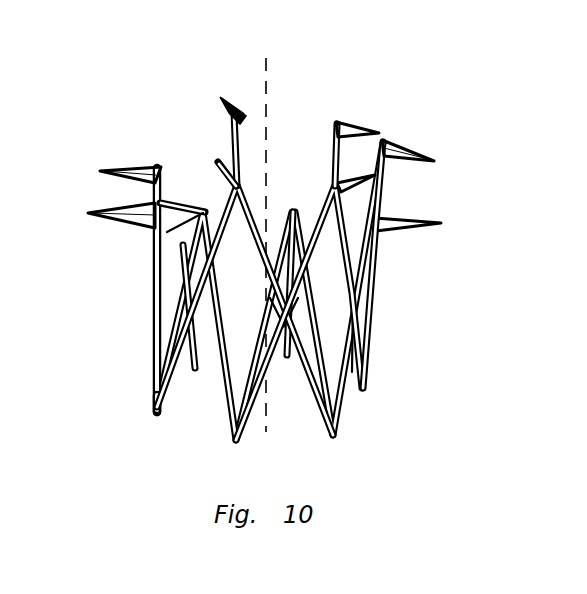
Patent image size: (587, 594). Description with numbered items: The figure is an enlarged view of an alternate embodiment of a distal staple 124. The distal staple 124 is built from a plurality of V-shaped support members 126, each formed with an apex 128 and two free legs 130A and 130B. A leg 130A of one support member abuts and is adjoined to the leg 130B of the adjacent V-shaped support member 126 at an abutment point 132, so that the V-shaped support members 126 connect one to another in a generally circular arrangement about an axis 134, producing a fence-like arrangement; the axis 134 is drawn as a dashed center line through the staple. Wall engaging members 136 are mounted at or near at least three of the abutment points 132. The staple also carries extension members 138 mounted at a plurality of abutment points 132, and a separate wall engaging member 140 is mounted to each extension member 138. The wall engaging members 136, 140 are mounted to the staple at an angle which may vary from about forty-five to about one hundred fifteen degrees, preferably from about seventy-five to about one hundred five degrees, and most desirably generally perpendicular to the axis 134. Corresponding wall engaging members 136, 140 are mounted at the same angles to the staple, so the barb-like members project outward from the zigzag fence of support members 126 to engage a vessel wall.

The distal staple 124 is at (249, 257).
The V-shaped support member 126 is at (150, 312).
The apex 128 is at (153, 415).
The leg 130A is at (248, 248).
The leg 130B is at (250, 198).
The abutment point 132 is at (248, 135).
The axis 134 is at (266, 66).
The wall engaging member 136 is at (228, 138).
The extension member 138 is at (232, 120).
The wall engaging member 140 is at (108, 173).